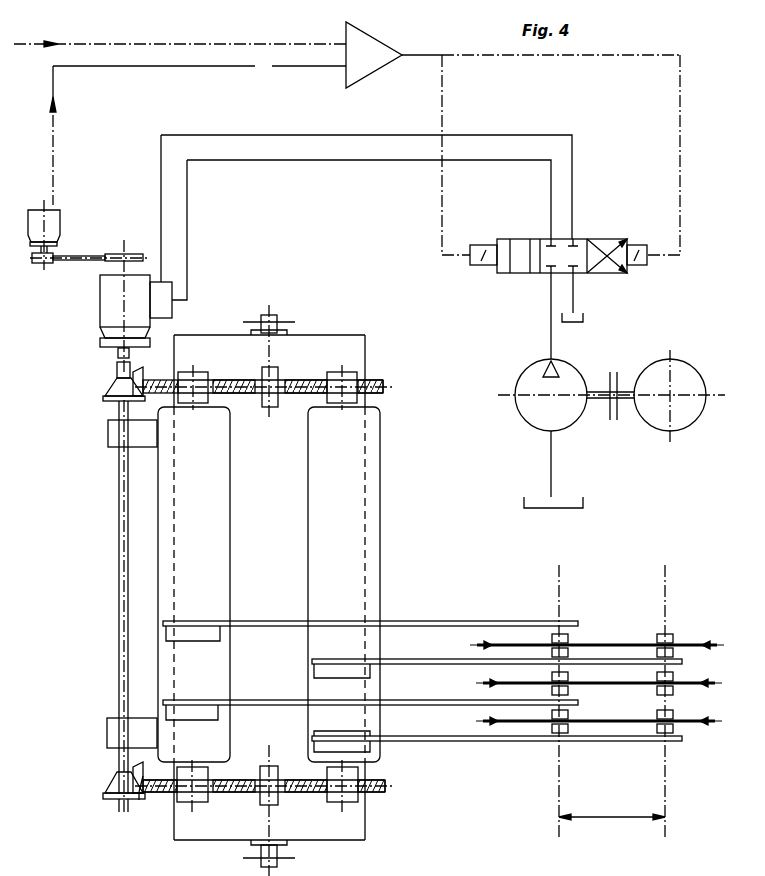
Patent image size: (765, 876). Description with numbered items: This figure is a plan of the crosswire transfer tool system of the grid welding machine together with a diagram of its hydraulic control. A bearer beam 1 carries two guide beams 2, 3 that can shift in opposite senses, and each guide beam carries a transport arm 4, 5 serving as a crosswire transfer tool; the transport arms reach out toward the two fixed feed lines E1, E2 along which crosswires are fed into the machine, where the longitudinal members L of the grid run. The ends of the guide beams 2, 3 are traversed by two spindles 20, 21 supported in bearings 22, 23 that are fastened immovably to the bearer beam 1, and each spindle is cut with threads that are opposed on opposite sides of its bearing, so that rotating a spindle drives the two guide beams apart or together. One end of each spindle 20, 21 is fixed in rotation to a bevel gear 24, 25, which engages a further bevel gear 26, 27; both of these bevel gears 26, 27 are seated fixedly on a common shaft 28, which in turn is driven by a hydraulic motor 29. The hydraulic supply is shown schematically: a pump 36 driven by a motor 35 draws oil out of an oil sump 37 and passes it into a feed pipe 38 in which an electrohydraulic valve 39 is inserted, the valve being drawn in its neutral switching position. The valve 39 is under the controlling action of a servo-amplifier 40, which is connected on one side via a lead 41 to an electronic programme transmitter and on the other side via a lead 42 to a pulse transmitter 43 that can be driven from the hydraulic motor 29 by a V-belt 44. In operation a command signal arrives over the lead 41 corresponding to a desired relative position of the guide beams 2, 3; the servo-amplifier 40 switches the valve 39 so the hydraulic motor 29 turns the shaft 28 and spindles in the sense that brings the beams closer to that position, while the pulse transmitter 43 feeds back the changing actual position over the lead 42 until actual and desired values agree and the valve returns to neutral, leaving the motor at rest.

The bearer beam 1 is at (272, 506).
The guide beam 2 is at (200, 551).
The guide beam 3 is at (340, 551).
The transport arm 4 is at (439, 621).
The transport arm 5 is at (432, 659).
The spindle 20 is at (301, 396).
The spindle 21 is at (305, 795).
The bearing 22 is at (266, 408).
The bearing 23 is at (275, 768).
The bevel gear 24 is at (147, 378).
The bevel gear 25 is at (146, 795).
The bevel gear 26 is at (108, 400).
The bevel gear 27 is at (110, 805).
The common shaft 28 is at (118, 574).
The hydraulic motor 29 is at (135, 315).
The motor 35 is at (681, 410).
The pump 36 is at (562, 410).
The oil sump 37 is at (584, 318).
The feed pipe 38 is at (551, 338).
The electrohydraulic valve 39 is at (598, 245).
The servo-amplifier 40 is at (376, 64).
The lead 41 is at (258, 46).
The lead 42 is at (260, 68).
The pulse transmitter 43 is at (62, 222).
The V-belt 44 is at (77, 263).
The feed line E1 is at (559, 694).
The feed line E2 is at (672, 694).
The longitudinal members L is at (612, 641).